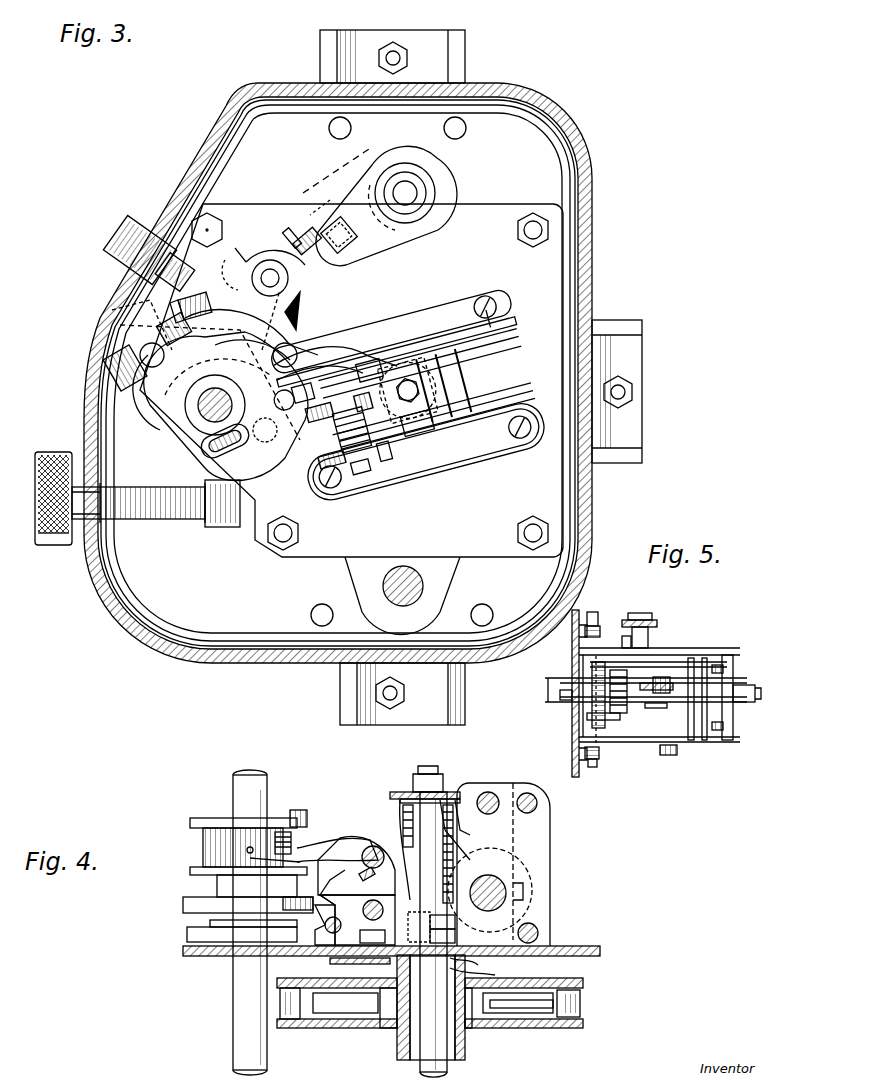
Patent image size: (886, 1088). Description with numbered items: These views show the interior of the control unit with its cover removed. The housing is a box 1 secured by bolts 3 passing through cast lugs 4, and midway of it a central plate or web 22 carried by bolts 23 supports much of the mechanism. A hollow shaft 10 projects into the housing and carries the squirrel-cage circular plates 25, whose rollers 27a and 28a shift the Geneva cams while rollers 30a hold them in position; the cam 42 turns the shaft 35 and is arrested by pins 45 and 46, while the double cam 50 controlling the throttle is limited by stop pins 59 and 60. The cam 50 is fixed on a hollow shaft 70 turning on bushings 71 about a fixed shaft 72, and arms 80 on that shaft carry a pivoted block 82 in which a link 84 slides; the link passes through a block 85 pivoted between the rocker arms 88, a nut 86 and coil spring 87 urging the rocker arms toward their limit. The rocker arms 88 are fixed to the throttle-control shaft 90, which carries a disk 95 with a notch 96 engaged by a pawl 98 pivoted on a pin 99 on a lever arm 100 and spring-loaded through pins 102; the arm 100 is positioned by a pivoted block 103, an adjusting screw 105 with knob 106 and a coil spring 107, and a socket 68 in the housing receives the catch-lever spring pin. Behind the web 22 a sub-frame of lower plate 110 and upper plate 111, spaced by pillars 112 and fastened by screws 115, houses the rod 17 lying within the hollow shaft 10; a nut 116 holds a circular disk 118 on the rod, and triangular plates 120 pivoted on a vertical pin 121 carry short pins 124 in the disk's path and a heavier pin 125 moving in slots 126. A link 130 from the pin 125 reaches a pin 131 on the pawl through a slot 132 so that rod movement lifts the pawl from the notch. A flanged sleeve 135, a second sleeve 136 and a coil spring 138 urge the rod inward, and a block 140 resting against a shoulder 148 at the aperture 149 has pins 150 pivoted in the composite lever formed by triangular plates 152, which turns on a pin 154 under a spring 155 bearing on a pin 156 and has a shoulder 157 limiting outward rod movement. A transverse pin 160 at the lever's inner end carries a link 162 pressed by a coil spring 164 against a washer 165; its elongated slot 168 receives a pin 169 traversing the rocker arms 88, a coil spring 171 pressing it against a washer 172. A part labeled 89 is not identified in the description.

In FIG. 3, the box 1 is at (575, 165).
In FIG. 3, the bolts 3 is at (407, 56).
In FIG. 3, the lugs 4 is at (465, 57).
In FIG. 4, the hollow shaft 10 is at (395, 1045).
In FIG. 3, the rod 17 is at (418, 385).
In FIG. 5, the rod 17 is at (555, 678).
In FIG. 4, the rod 17 is at (447, 1055).
In FIG. 3, the central plate or web 22 is at (495, 204).
In FIG. 4, the central plate or web 22 is at (570, 946).
In FIG. 3, the bolts 23 is at (207, 230).
In FIG. 4, the circular plates 25 is at (583, 978).
In FIG. 4, the roller 27a is at (300, 1019).
In FIG. 4, the roller 28a is at (580, 1000).
In FIG. 4, the rollers 30a is at (350, 1013).
In FIG. 3, the shaft 35 is at (423, 577).
In FIG. 3, the cam 42 is at (462, 565).
In FIG. 3, the pin 45 is at (333, 615).
In FIG. 3, the pin 46 is at (493, 615).
In FIG. 4, the double cam 50 is at (520, 1008).
In FIG. 3, the pin 59 is at (351, 126).
In FIG. 3, the stop pin 60 is at (466, 128).
In FIG. 3, the socket 68 is at (135, 228).
In FIG. 3, the hollow shaft 70 is at (433, 190).
In FIG. 3, the bushings 71 is at (420, 183).
In FIG. 3, the fixed shaft 72 is at (410, 193).
In FIG. 3, the arms 80 is at (392, 236).
In FIG. 3, the pivoted block 82 is at (337, 181).
In FIG. 3, the link 84 is at (315, 250).
In FIG. 3, the block 85 is at (142, 324).
In FIG. 3, the nut 86 is at (125, 345).
In FIG. 3, the coil spring 87 is at (344, 248).
In FIG. 3, the rocker arms 88 is at (165, 405).
In FIG. 4, the rocker arms 88 is at (225, 818).
In FIG. 4, the lever arm 89 is at (291, 840).
In FIG. 3, the throttle-control shaft 90 is at (238, 390).
In FIG. 4, the throttle-control shaft 90 is at (267, 1055).
In FIG. 3, the disk 95 is at (228, 322).
In FIG. 4, the disk 95 is at (183, 904).
In FIG. 3, the notch 96 is at (250, 318).
In FIG. 3, the pawl 98 is at (300, 300).
In FIG. 3, the pin 99 is at (272, 269).
In FIG. 3, the lever arm 100 is at (268, 245).
In FIG. 3, the pins 102 is at (237, 262).
In FIG. 3, the pivoted block 103 is at (228, 527).
In FIG. 3, the adjusting screw 105 is at (140, 519).
In FIG. 3, the knob 106 is at (52, 545).
In FIG. 3, the coil spring 107 is at (170, 519).
In FIG. 3, the lower plate 110 is at (535, 432).
In FIG. 5, the lower plate 110 is at (610, 648).
In FIG. 3, the upper plate 111 is at (520, 318).
In FIG. 5, the upper plate 111 is at (600, 770).
In FIG. 4, the upper plate 111 is at (550, 810).
In FIG. 5, the pillars 112 is at (572, 705).
In FIG. 4, the pillars 112 is at (537, 800).
In FIG. 3, the screws 115 is at (332, 488).
In FIG. 5, the screws 115 is at (593, 612).
In FIG. 3, the nut 116 is at (440, 378).
In FIG. 5, the nut 116 is at (745, 690).
In FIG. 4, the nut 116 is at (455, 770).
In FIG. 3, the circular disk 118 is at (508, 350).
In FIG. 5, the circular disk 118 is at (740, 705).
In FIG. 4, the circular disk 118 is at (453, 794).
In FIG. 3, the triangular plates 120 is at (523, 300).
In FIG. 5, the triangular plates 120 is at (733, 655).
In FIG. 4, the triangular plates 120 is at (513, 783).
In FIG. 3, the vertical pin 121 is at (470, 385).
In FIG. 4, the vertical pin 121 is at (488, 792).
In FIG. 3, the short pins 124 is at (395, 320).
In FIG. 5, the short pins 124 is at (723, 667).
In FIG. 4, the short pins 124 is at (398, 815).
In FIG. 3, the heavier pin 125 is at (455, 290).
In FIG. 5, the heavier pin 125 is at (648, 662).
In FIG. 4, the heavier pin 125 is at (506, 893).
In FIG. 4, the slots 126 is at (523, 890).
In FIG. 3, the link 130 is at (370, 318).
In FIG. 5, the link 130 is at (655, 622).
In FIG. 3, the pin 131 is at (318, 322).
In FIG. 3, the slot 132 is at (312, 340).
In FIG. 5, the flanged sleeve 135 is at (690, 670).
In FIG. 4, the flanged sleeve 135 is at (470, 835).
In FIG. 3, the second sleeve 136 is at (408, 390).
In FIG. 4, the second sleeve 136 is at (470, 865).
In FIG. 5, the coil spring 138 is at (707, 740).
In FIG. 4, the coil spring 138 is at (442, 850).
In FIG. 3, the block 140 is at (445, 440).
In FIG. 5, the block 140 is at (592, 688).
In FIG. 4, the block 140 is at (455, 922).
In FIG. 4, the shoulder 148 is at (486, 973).
In FIG. 4, the aperture 149 is at (476, 963).
In FIG. 4, the pins 150 is at (455, 936).
In FIG. 3, the triangular plates 152 is at (322, 392).
In FIG. 5, the triangular plates 152 is at (694, 665).
In FIG. 4, the triangular plates 152 is at (375, 920).
In FIG. 4, the pin 154 is at (375, 943).
In FIG. 5, the spring 155 is at (605, 720).
In FIG. 4, the spring 155 is at (328, 945).
In FIG. 4, the pin 156 is at (410, 927).
In FIG. 4, the shoulder 157 is at (431, 1007).
In FIG. 3, the transverse pin 160 is at (385, 472).
In FIG. 5, the transverse pin 160 is at (665, 755).
In FIG. 4, the transverse pin 160 is at (360, 880).
In FIG. 3, the link 162 is at (358, 462).
In FIG. 5, the link 162 is at (622, 640).
In FIG. 4, the link 162 is at (340, 878).
In FIG. 3, the coil spring 164 is at (348, 428).
In FIG. 5, the coil spring 164 is at (618, 713).
In FIG. 4, the coil spring 164 is at (376, 848).
In FIG. 3, the washer 165 is at (365, 355).
In FIG. 5, the washer 165 is at (665, 677).
In FIG. 4, the washer 165 is at (360, 961).
In FIG. 3, the elongated slot 168 is at (232, 450).
In FIG. 3, the pin 169 is at (270, 442).
In FIG. 4, the pin 169 is at (283, 832).
In FIG. 4, the coil spring 171 is at (300, 810).
In FIG. 4, the washer 172 is at (255, 855).